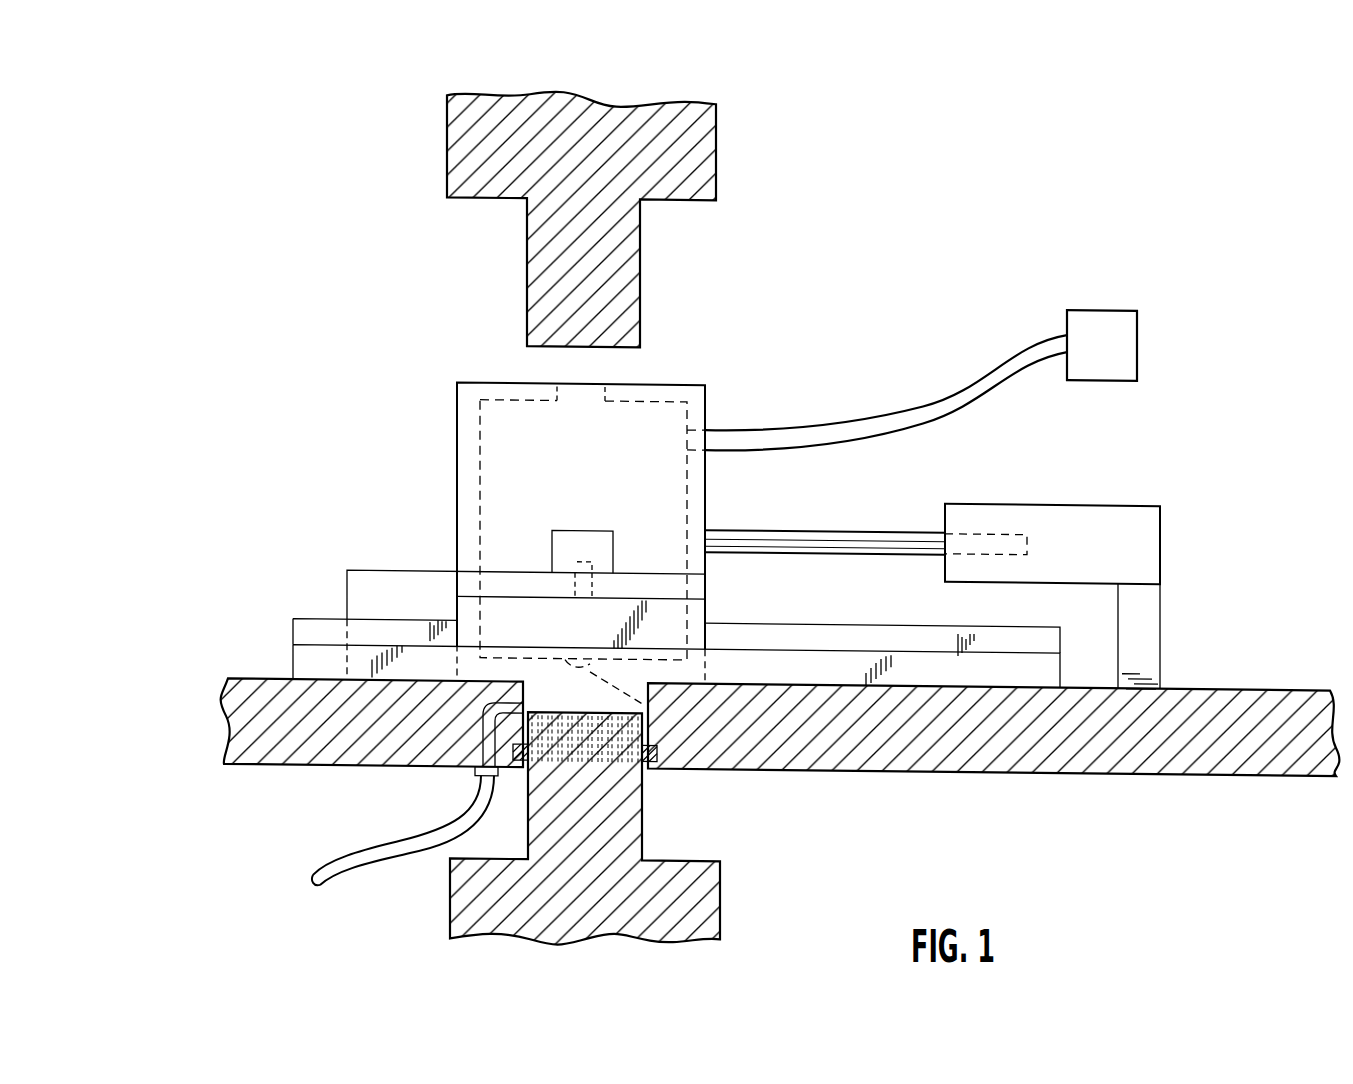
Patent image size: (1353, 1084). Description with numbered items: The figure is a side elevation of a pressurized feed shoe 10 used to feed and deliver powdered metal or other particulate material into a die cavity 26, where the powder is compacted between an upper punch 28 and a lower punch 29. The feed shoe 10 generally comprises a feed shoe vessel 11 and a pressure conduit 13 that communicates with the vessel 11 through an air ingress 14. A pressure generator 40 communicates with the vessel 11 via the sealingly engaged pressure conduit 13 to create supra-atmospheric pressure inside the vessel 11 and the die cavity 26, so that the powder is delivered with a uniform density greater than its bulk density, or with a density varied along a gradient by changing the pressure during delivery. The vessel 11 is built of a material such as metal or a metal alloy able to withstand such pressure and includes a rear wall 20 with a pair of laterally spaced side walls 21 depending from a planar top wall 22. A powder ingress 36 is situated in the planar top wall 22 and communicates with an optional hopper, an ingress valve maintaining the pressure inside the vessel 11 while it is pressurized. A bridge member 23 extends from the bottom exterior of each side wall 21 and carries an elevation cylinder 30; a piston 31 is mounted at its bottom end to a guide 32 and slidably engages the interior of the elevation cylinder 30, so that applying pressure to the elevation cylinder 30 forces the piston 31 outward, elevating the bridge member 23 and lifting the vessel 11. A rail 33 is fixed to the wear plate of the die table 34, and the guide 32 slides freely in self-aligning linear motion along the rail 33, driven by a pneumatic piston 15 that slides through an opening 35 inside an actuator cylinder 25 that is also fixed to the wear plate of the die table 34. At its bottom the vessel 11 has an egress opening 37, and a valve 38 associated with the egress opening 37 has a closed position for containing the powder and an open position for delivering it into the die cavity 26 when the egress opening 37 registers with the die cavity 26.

The feed shoe 10 is at (707, 424).
The feed shoe vessel 11 is at (707, 489).
The pressure conduit 13 is at (923, 409).
The air ingress 14 is at (739, 371).
The pneumatic piston 15 is at (867, 532).
The rear wall 20 is at (707, 507).
The side wall 21 is at (490, 452).
The planar top wall 22 is at (490, 383).
The bridge member 23 is at (293, 633).
The actuator cylinder 25 is at (1030, 517).
The die cavity 26 is at (643, 692).
The upper punch 28 is at (643, 250).
The lower punch 29 is at (624, 829).
The elevation cylinder 30 is at (603, 531).
The piston 31 is at (577, 559).
The guide 32 is at (502, 610).
The rail 33 is at (293, 666).
The die table 34 is at (1238, 682).
The opening 35 is at (937, 531).
The powder ingress 36 is at (598, 380).
The bottom egress opening 37 is at (565, 657).
The valve 38 is at (675, 790).
The pressure generator 40 is at (1114, 302).